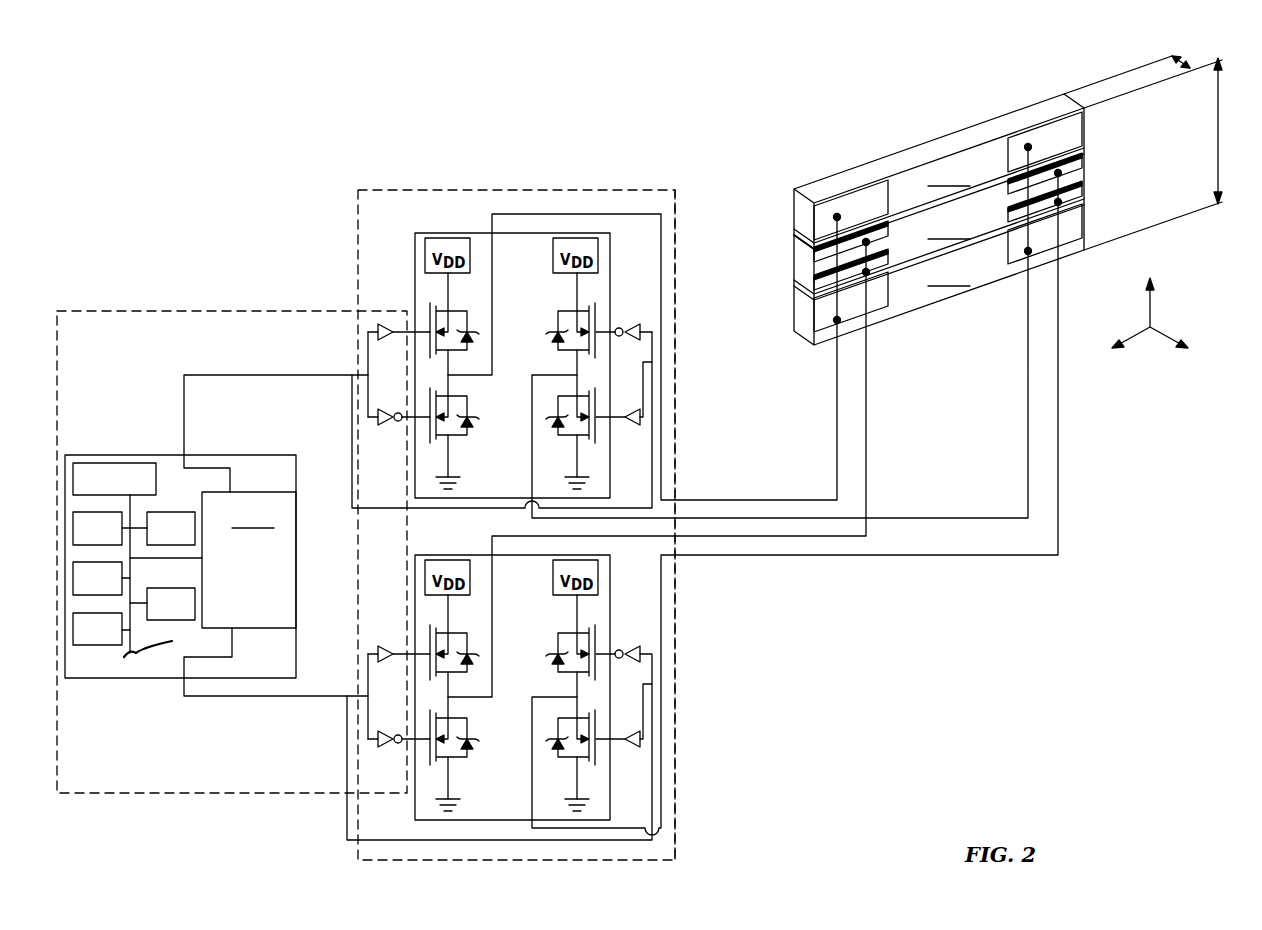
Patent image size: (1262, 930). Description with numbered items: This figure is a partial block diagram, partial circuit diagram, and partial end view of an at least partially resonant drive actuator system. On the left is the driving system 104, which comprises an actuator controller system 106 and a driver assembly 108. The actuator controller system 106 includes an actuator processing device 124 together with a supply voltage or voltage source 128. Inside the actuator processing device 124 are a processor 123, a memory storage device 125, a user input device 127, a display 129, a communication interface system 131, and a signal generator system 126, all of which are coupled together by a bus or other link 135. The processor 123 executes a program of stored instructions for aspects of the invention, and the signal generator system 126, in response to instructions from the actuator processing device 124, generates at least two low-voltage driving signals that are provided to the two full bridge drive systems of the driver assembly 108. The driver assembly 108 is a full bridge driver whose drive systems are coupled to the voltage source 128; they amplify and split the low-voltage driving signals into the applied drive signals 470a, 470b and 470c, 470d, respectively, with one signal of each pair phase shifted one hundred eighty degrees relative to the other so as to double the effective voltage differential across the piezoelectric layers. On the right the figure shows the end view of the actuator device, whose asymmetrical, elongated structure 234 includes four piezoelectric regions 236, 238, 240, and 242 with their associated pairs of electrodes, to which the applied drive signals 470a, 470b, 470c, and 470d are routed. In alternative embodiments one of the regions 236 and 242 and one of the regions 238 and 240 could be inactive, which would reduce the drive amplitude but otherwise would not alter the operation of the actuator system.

The driving system 104 is at (72, 128).
The actuator controller system 106 is at (112, 306).
The driver assembly 108 is at (678, 806).
The processor 123 is at (119, 542).
The actuator processing device 124 is at (233, 455).
The memory storage device 125 is at (119, 592).
The signal generator system 126 is at (217, 560).
The user input device 127 is at (119, 643).
The voltage source 128 is at (113, 463).
The display 129 is at (192, 542).
The communication interface system 131 is at (192, 618).
The bus 135 is at (171, 642).
The elongated structure 234 is at (918, 147).
The piezoelectric region 236 is at (939, 195).
The piezoelectric region 238 is at (939, 224).
The piezoelectric region 240 is at (800, 238).
The piezoelectric region 242 is at (939, 252).
The applied drive signal 470a is at (745, 500).
The applied drive signal 470b is at (935, 518).
The applied drive signal 470c is at (770, 536).
The applied drive signal 470d is at (945, 555).